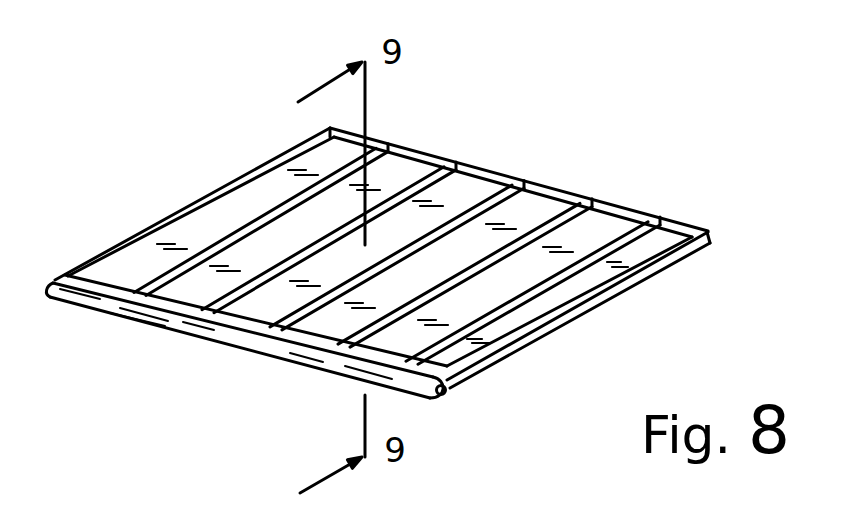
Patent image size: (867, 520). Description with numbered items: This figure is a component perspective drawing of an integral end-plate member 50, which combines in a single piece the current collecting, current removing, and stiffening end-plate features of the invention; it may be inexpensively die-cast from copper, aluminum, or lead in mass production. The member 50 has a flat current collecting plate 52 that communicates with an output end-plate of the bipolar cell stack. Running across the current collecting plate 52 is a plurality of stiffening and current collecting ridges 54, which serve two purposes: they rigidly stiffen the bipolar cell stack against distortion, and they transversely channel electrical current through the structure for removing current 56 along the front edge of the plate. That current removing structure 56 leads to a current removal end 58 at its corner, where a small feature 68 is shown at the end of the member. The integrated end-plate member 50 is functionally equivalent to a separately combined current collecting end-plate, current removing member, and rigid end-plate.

The integral end-plate member 50 is at (608, 340).
The current collecting plate 52 is at (597, 230).
The stiffening and current collecting ridges 54 is at (501, 192).
The structure for removing current 56 is at (220, 333).
The current removal end 58 is at (450, 389).
The pin opening 68 is at (442, 395).